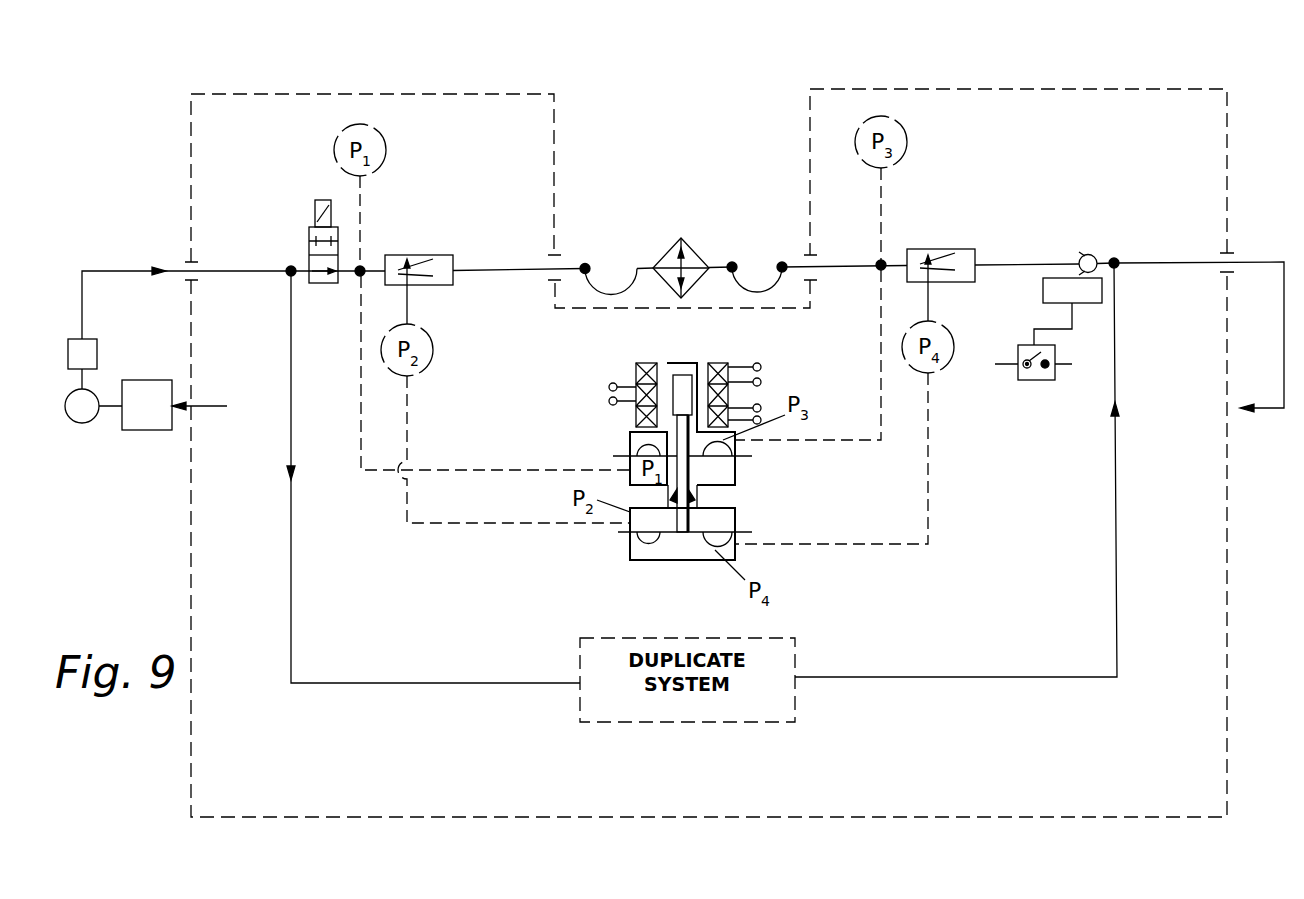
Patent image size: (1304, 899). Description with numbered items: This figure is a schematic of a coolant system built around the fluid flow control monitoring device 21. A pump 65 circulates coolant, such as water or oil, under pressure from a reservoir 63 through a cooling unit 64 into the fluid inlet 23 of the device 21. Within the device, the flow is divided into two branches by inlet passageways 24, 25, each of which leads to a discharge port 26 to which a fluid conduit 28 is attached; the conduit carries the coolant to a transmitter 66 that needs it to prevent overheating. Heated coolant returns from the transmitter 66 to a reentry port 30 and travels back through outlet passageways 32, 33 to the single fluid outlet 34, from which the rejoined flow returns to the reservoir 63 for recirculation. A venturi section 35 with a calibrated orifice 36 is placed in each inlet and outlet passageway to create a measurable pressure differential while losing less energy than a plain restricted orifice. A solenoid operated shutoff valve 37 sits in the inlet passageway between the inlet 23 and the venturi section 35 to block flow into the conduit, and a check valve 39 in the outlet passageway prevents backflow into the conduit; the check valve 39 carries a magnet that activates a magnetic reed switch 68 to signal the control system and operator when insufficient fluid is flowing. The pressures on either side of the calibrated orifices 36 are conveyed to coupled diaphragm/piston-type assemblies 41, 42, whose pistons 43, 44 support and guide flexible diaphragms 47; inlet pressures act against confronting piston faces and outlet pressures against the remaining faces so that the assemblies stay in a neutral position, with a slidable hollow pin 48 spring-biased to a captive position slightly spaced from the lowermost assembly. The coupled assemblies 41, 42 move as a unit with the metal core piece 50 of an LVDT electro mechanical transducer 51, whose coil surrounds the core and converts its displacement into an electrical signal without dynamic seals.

The fluid flow control monitoring device 21 is at (988, 82).
The fluid inlet 23 is at (190, 268).
The inlet passageway 24 is at (297, 280).
The inlet passageway 25 is at (293, 405).
The discharge port 26 is at (565, 268).
The fluid conduit 28 is at (598, 290).
The reentry port 30 is at (802, 262).
The outlet passageway 32 is at (889, 258).
The outlet passageway 33 is at (1120, 497).
The fluid outlet 34 is at (1232, 262).
The venturi section 35 is at (437, 256).
The calibrated orifice 36 is at (407, 262).
The solenoid operated shutoff valve 37 is at (321, 198).
The check valve 39 is at (1087, 254).
The diaphragm/piston-type assembly 41 is at (735, 462).
The diaphragm/piston-type assembly 42 is at (735, 522).
The piston 43 is at (705, 470).
The piston 44 is at (690, 537).
The flexible diaphragm 47 is at (640, 450).
The slidable hollow pin 48 is at (640, 542).
The metal core piece 50 is at (679, 375).
The LVDT electro mechanical transducer 51 is at (648, 363).
The reservoir 63 is at (151, 430).
The cooling unit 64 is at (97, 352).
The pump 65 is at (76, 423).
The transmitter 66 is at (685, 256).
The magnetic reed switch 68 is at (1040, 382).